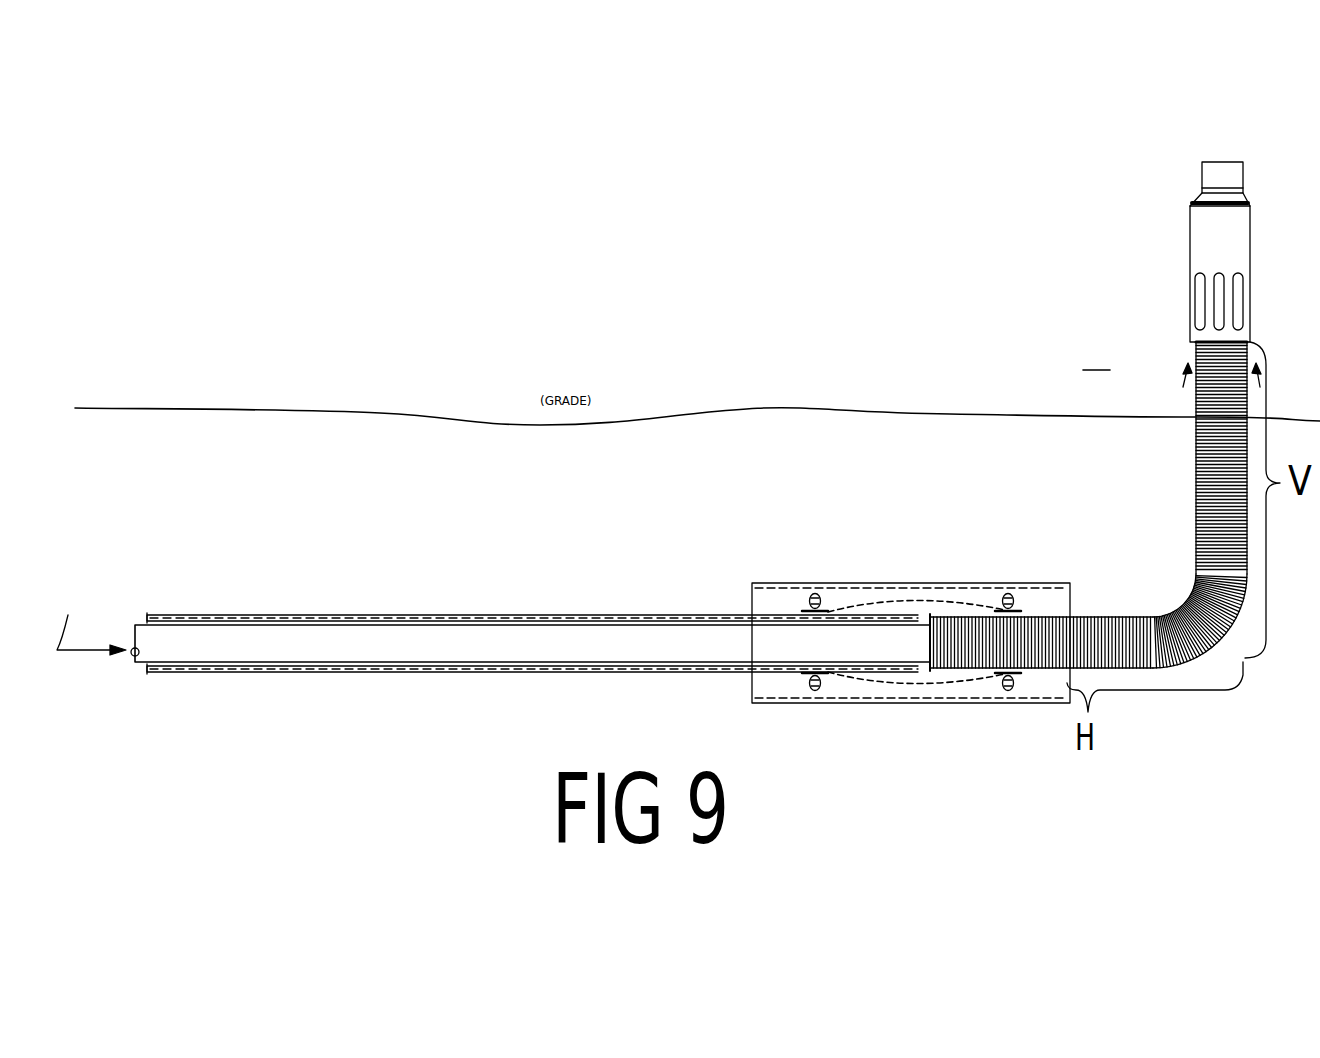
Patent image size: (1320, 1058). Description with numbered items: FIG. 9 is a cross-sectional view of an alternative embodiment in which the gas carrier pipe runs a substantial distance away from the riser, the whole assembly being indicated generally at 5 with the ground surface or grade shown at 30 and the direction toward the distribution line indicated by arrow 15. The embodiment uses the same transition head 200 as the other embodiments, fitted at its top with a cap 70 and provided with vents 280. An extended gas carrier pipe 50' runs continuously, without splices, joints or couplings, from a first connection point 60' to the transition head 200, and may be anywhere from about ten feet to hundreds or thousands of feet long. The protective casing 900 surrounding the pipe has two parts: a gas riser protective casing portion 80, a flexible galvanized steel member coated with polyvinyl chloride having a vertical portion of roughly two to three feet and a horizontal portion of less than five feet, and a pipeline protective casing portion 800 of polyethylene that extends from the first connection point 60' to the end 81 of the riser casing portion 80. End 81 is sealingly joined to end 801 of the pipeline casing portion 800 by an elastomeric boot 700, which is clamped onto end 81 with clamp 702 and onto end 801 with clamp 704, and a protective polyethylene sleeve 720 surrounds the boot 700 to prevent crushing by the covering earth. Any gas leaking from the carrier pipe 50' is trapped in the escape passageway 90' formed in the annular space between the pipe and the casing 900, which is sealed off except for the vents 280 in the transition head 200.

The fluid flow arrow 15 is at (85, 607).
The grade line 30 is at (400, 408).
The extended gas carrier pipe 50' is at (187, 603).
The first connection point 60' is at (153, 701).
The cap 70 is at (1203, 162).
The gas riser protective casing portion 80 is at (1125, 617).
The end of gas riser protective casing portion 81 is at (925, 617).
The escape passageway 90' is at (534, 575).
The transition head 200 is at (1203, 238).
The vents 280 is at (1199, 382).
The elastomeric boot 700 is at (900, 672).
The clamp 702 is at (1003, 595).
The clamp 704 is at (803, 603).
The protective polyethylene sleeve 720 is at (1013, 703).
The pipeline protective casing portion 800 is at (363, 617).
The end of pipeline protective casing portion 801 is at (907, 613).
The protective casing 900 is at (546, 676).
The vent assembly 5 is at (1096, 348).